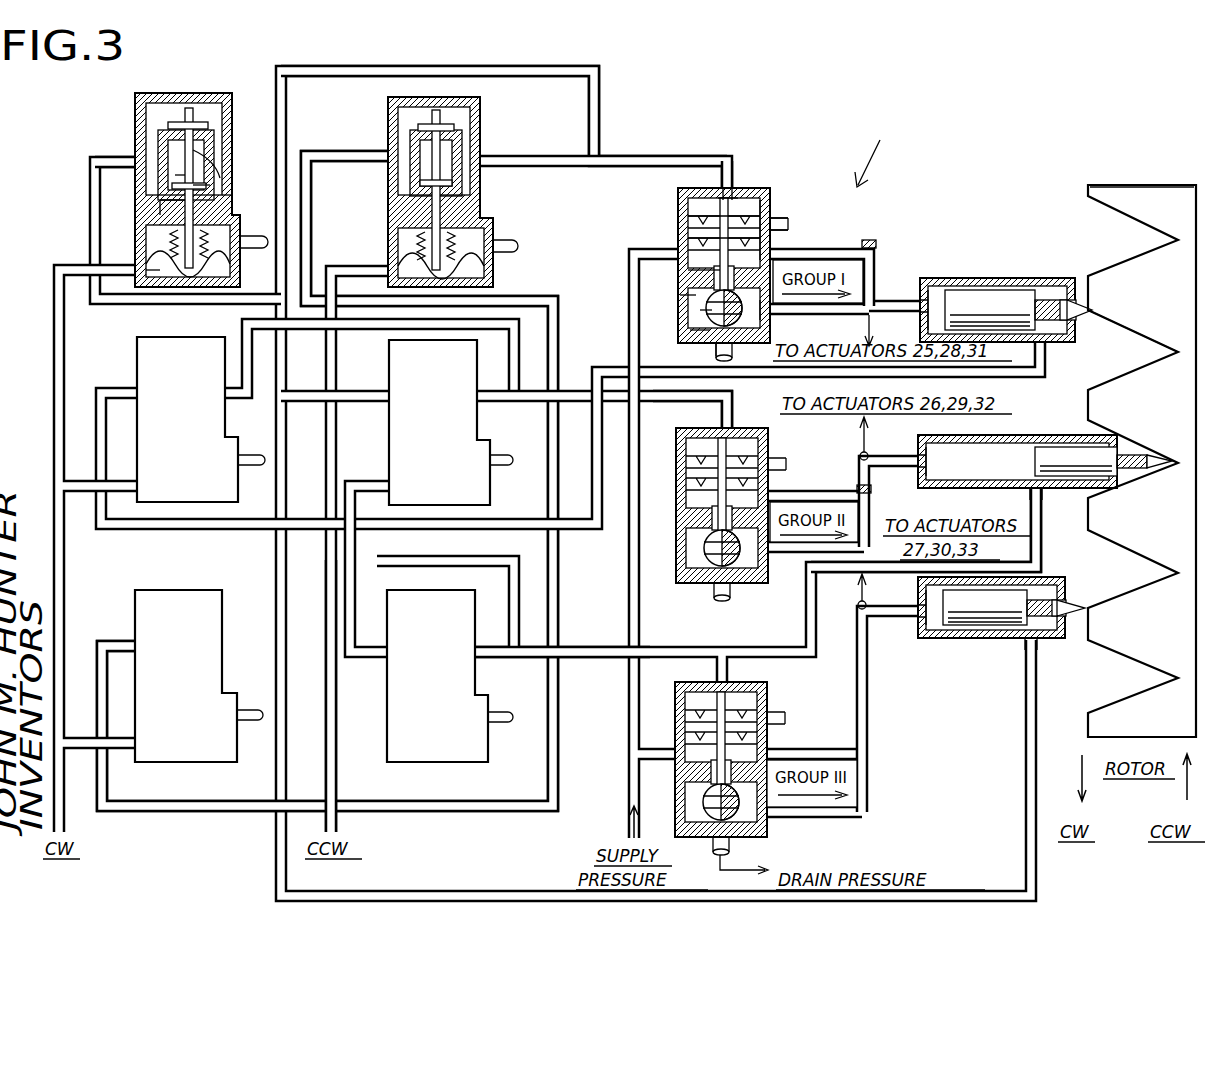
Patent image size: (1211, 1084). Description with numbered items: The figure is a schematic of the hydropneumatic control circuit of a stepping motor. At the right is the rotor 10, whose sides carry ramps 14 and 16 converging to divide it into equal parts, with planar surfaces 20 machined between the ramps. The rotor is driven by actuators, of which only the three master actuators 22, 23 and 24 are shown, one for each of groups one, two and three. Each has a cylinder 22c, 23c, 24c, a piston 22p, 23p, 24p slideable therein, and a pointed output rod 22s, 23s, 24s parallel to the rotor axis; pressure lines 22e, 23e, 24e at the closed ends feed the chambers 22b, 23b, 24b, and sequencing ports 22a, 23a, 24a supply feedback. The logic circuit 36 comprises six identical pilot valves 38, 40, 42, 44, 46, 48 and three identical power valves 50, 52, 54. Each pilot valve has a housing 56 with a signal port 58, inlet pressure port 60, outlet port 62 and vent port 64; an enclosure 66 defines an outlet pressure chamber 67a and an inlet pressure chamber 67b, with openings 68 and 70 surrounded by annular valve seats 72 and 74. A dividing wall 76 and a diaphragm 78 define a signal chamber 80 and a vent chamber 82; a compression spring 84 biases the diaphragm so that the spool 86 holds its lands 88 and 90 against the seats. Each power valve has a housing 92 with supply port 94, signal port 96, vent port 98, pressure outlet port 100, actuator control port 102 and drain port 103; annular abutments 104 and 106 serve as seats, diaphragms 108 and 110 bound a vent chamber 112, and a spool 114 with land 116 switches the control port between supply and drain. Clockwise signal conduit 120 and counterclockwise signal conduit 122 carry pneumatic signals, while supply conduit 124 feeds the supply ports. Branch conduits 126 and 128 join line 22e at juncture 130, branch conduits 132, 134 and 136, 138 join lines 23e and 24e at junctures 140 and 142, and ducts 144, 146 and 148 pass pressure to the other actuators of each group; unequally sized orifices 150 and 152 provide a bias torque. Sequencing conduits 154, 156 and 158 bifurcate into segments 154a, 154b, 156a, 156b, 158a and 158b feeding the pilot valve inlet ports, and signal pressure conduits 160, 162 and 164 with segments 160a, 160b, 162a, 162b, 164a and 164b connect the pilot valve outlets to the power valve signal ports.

The rotor 10 is at (1142, 461).
The ramp 14 is at (1120, 215).
The ramp 16 is at (1145, 255).
The planar surface 20 is at (1090, 290).
The actuator 22 is at (996, 281).
The sequencing port 22a is at (1047, 352).
The chamber 22b is at (938, 290).
The cylinder 22c is at (998, 280).
The pressure line 22e is at (897, 305).
The piston 22p is at (990, 310).
The pointed output rod 22s is at (1048, 300).
The actuator 23 is at (1034, 460).
The sequencing port 23a is at (1036, 498).
The chamber 23b is at (950, 470).
The cylinder 23c is at (960, 470).
The pressure line 23e is at (905, 462).
The piston 23p is at (1090, 463).
The pointed output rod 23s is at (1142, 460).
The actuator 24 is at (1004, 620).
The sequencing port 24a is at (1033, 645).
The chamber 24b is at (934, 612).
The cylinder 24c is at (1005, 640).
The pressure line 24e is at (908, 615).
The piston 24p is at (985, 607).
The pointed output rod 24s is at (1058, 612).
The logic circuit 36 is at (883, 159).
The pilot valve 38 is at (157, 172).
The pilot valve 40 is at (182, 378).
The pilot valve 42 is at (182, 631).
The pilot valve 44 is at (485, 108).
The pilot valve 46 is at (435, 384).
The pilot valve 48 is at (432, 631).
The power valve 50 is at (709, 246).
The power valve 52 is at (678, 468).
The power valve 54 is at (760, 688).
The housing 56 is at (232, 108).
The signal port 58 is at (148, 270).
The inlet pressure port 60 is at (138, 150).
The outlet port 62 is at (218, 150).
The vent port 64 is at (248, 238).
The enclosure 66 is at (110, 157).
The outlet pressure chamber 67a is at (172, 168).
The inlet pressure chamber 67b is at (150, 116).
The circular opening 68 is at (220, 178).
The circular opening 70 is at (212, 190).
The annular valve seat 72 is at (205, 134).
The annular valve seat 74 is at (222, 198).
The dividing wall 76 is at (280, 210).
The diaphragm 78 is at (160, 232).
The signal chamber 80 is at (238, 276).
The vent chamber 82 is at (232, 252).
The compression spring 84 is at (160, 205).
The spool 86 is at (189, 110).
The land 88 is at (172, 124).
The land 90 is at (178, 185).
The housing 92 is at (765, 196).
The supply port 94 is at (688, 270).
The signal port 96 is at (740, 196).
The vent port 98 is at (778, 234).
The pressure outlet port 100 is at (775, 256).
The actuator control port 102 is at (768, 318).
The drain port 103 is at (726, 352).
The annular abutment 104 is at (690, 286).
The annular abutment 106 is at (700, 338).
The diaphragm 108 is at (718, 195).
The diaphragm 110 is at (690, 220).
The vent chamber 112 is at (780, 205).
The spool 114 is at (690, 238).
The land 116 is at (700, 302).
The clockwise signal conduit 120 is at (66, 555).
The counterclockwise signal conduit 122 is at (330, 645).
The supply conduit 124 is at (630, 728).
The branch conduit 126 is at (870, 245).
The branch conduit 128 is at (818, 314).
The juncture 130 is at (876, 300).
The branch conduit 132 is at (780, 490).
The branch conduit 134 is at (796, 549).
The branch conduit 136 is at (808, 748).
The branch conduit 138 is at (848, 816).
The juncture 140 is at (868, 492).
The juncture 142 is at (865, 745).
The duct 144 is at (880, 314).
The duct 146 is at (860, 450).
The duct 148 is at (856, 605).
The orifice 150 is at (870, 238).
The orifice 152 is at (860, 484).
The sequencing conduit 154 is at (1030, 385).
The sequencing conduit segment 154a is at (168, 528).
The sequencing conduit segment 154b is at (366, 660).
The sequencing conduit 156 is at (1030, 550).
The sequencing conduit segment 156a is at (556, 708).
The sequencing conduit segment 156b is at (358, 154).
The sequencing conduit 158 is at (1025, 753).
The sequencing conduit segment 158a is at (95, 308).
The sequencing conduit segment 158b is at (306, 390).
The power valve signal pressure conduit 160 is at (708, 162).
The signal pressure conduit segment 160a is at (603, 80).
The signal pressure conduit segment 160b is at (542, 162).
The power valve signal pressure conduit 162 is at (728, 388).
The signal pressure conduit segment 162a is at (514, 340).
The signal pressure conduit segment 162b is at (490, 400).
The power valve signal pressure conduit 164 is at (712, 650).
The signal pressure conduit segment 164a is at (508, 575).
The signal pressure conduit segment 164b is at (490, 660).